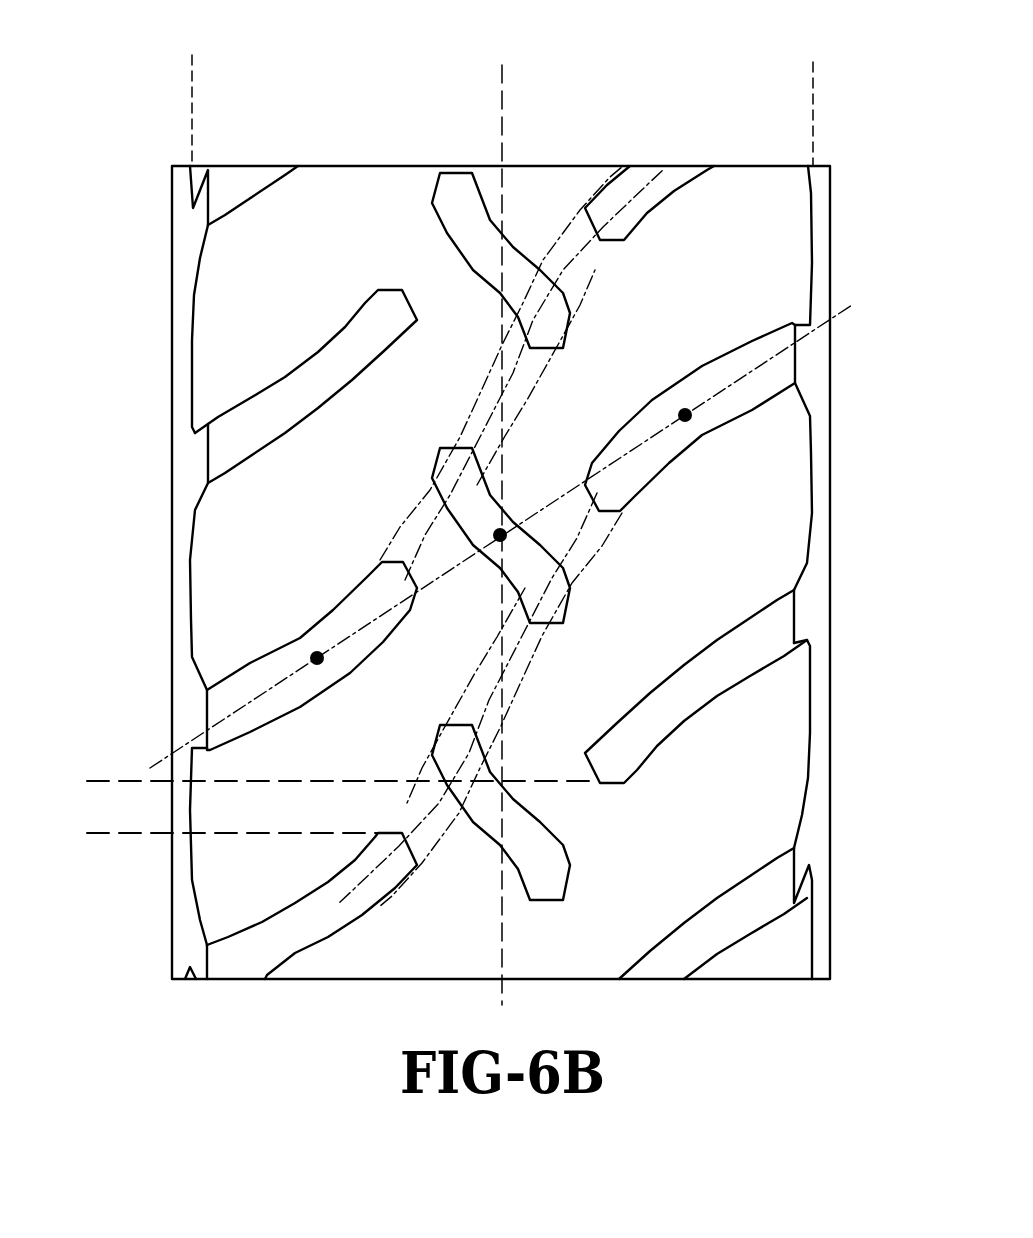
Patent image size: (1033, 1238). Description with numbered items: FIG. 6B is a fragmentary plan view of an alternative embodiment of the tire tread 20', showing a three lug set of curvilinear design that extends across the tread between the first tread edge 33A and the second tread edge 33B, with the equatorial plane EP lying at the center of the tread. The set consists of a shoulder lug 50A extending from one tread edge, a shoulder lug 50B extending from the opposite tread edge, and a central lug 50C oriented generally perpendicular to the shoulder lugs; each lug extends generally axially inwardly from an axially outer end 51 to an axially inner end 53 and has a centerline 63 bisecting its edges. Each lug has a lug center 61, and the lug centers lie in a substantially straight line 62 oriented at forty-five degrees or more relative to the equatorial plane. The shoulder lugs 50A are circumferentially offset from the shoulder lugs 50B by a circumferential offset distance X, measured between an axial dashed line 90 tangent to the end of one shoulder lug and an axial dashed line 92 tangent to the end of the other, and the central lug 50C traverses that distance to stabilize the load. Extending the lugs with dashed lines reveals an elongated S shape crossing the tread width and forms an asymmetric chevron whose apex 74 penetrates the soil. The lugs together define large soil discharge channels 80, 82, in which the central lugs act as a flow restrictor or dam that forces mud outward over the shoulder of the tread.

The tire tread 20' is at (471, 492).
The first tread edge 33A is at (192, 77).
The second tread edge 33B is at (813, 78).
The equatorial plane EP is at (502, 521).
The soil discharge channel 80 is at (240, 378).
The soil discharge channel 82 is at (767, 233).
The shoulder lug 50A is at (222, 690).
The shoulder lug 50B is at (767, 652).
The central lug 50C is at (523, 840).
The axially outer end 51 is at (543, 350).
The axially inner end 53 is at (462, 447).
The lug center 61 is at (312, 652).
The straight line 62 is at (778, 348).
The centerline 63 is at (632, 460).
The apex 74 is at (563, 625).
The axial dashed line 90 is at (157, 832).
The axial dashed line 92 is at (253, 777).
The circumferential offset distance X is at (102, 727).